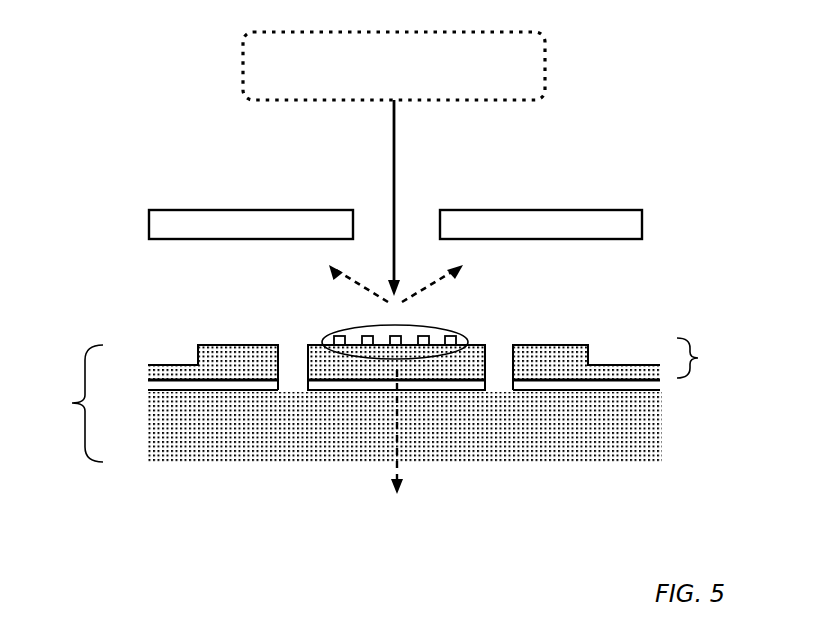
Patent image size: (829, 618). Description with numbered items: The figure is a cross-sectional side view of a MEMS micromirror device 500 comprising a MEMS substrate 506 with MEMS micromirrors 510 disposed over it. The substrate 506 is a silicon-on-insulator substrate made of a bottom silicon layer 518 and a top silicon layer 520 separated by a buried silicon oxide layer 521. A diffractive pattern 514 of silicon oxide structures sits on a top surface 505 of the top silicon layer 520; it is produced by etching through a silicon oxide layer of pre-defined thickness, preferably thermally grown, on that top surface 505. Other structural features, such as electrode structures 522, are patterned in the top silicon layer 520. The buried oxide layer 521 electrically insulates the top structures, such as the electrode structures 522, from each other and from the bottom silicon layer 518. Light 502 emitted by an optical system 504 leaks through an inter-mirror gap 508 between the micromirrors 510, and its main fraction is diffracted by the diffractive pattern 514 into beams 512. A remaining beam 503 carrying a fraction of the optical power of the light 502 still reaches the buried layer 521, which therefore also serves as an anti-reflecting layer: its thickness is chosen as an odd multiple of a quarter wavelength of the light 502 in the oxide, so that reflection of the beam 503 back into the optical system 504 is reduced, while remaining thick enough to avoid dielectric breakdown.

The MEMS micromirror device 500 is at (150, 80).
The light 502 is at (393, 165).
The beam 503 is at (392, 484).
The optical system 504 is at (394, 66).
The top surface 505 is at (482, 331).
The MEMS substrate 506 is at (56, 403).
The inter-mirror gap 508 is at (419, 178).
The MEMS micromirrors 510 is at (200, 210).
The beams 512 is at (320, 292).
The diffractive pattern 514 is at (328, 336).
The bottom silicon layer 518 is at (405, 427).
The top silicon layer 520 is at (530, 364).
The buried silicon oxide layer 521 is at (193, 385).
The electrode structures 522 is at (167, 365).